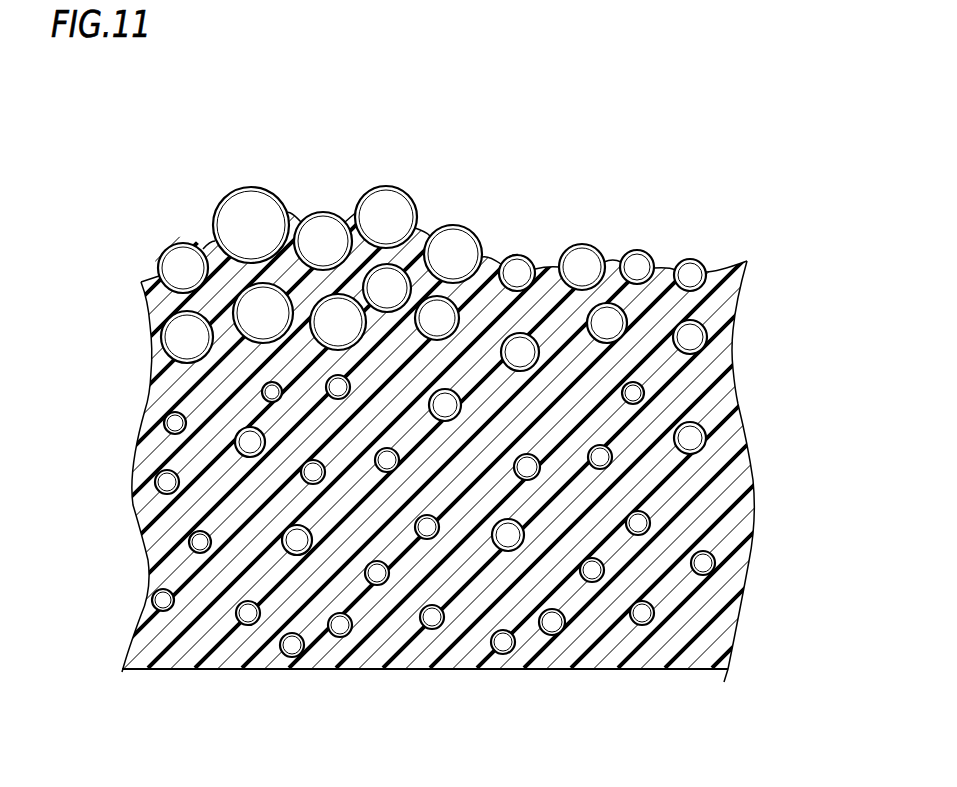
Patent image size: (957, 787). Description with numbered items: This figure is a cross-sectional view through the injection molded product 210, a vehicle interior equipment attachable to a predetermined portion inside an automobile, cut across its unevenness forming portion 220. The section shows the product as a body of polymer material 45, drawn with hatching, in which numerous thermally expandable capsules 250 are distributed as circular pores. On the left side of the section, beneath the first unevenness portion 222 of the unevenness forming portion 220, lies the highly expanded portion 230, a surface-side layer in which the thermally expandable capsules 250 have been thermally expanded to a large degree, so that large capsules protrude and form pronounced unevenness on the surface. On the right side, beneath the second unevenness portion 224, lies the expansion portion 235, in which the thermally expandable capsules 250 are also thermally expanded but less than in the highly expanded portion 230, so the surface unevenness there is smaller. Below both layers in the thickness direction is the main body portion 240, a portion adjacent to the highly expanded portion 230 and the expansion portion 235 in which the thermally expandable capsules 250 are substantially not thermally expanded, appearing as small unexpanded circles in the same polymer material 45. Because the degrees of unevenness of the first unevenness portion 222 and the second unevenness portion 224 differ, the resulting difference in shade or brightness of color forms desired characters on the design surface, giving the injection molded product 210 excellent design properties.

The injection molded product 210 is at (744, 150).
The unevenness forming portion 220 is at (444, 182).
The first unevenness portion 222 is at (368, 156).
The second unevenness portion 224 is at (590, 190).
The highly expanded portion 230 is at (118, 186).
The expansion portion 235 is at (775, 240).
The main body portion 240 is at (118, 374).
The thermally expandable capsules 250 is at (312, 214).
The polymer material 45 is at (225, 282).